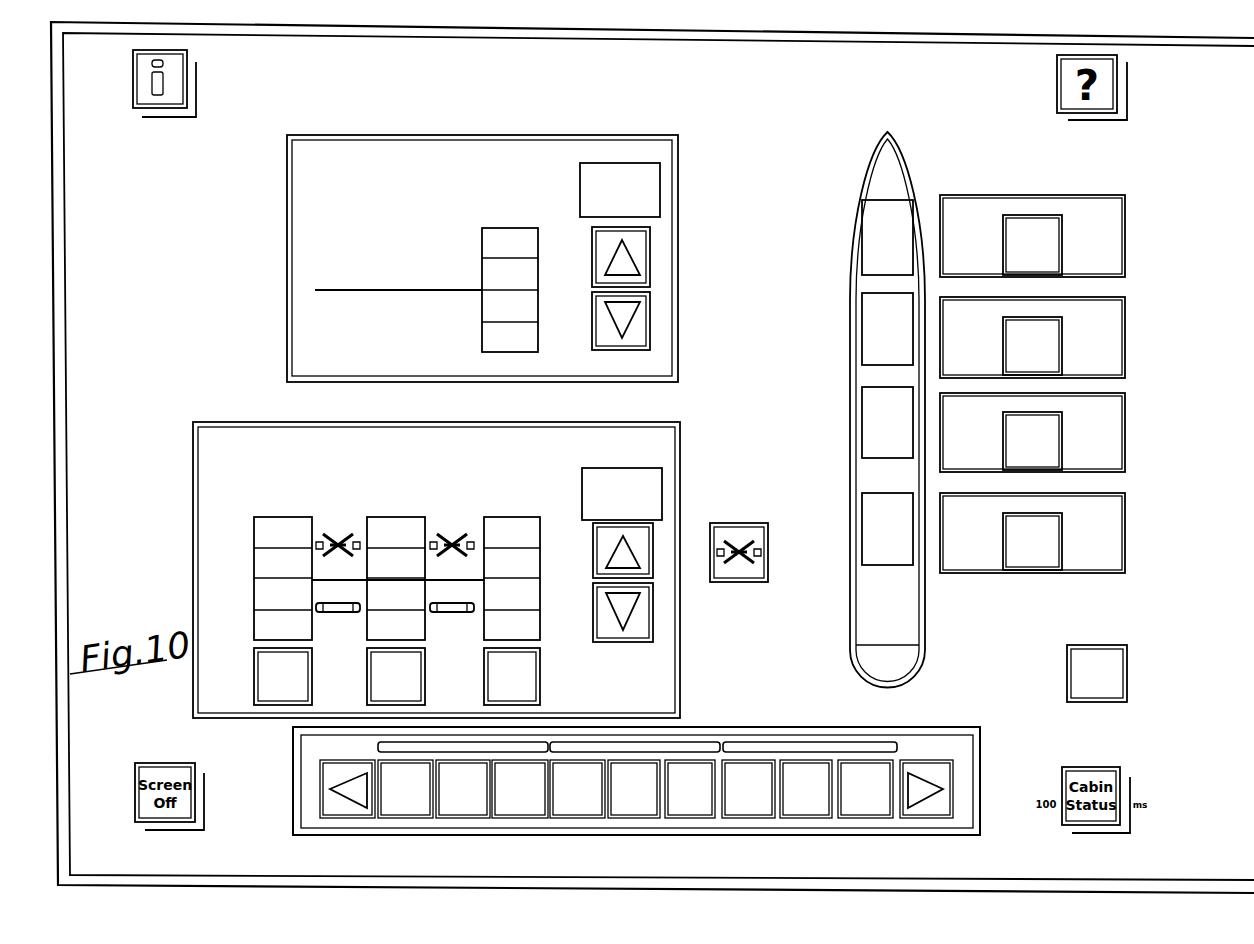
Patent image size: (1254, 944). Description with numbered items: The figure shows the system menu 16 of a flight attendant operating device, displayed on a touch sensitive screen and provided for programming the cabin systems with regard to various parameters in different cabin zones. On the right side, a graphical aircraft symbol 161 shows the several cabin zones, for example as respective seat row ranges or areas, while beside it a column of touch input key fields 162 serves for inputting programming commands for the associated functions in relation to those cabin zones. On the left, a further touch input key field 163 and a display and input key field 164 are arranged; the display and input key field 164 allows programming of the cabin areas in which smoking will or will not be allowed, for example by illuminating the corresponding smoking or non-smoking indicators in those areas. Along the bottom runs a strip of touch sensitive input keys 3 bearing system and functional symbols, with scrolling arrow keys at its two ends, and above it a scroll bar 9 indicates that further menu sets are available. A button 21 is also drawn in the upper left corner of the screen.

The system menu 16 is at (1170, 205).
The information button 21 is at (156, 79).
The touch input key field 163 is at (328, 229).
The display and input key field 164 is at (222, 490).
The touch input key field 162 is at (1100, 262).
The graphical aircraft symbol 161 is at (905, 598).
The scroll bar 9 is at (662, 741).
The touch sensitive input keys 3 is at (636, 769).